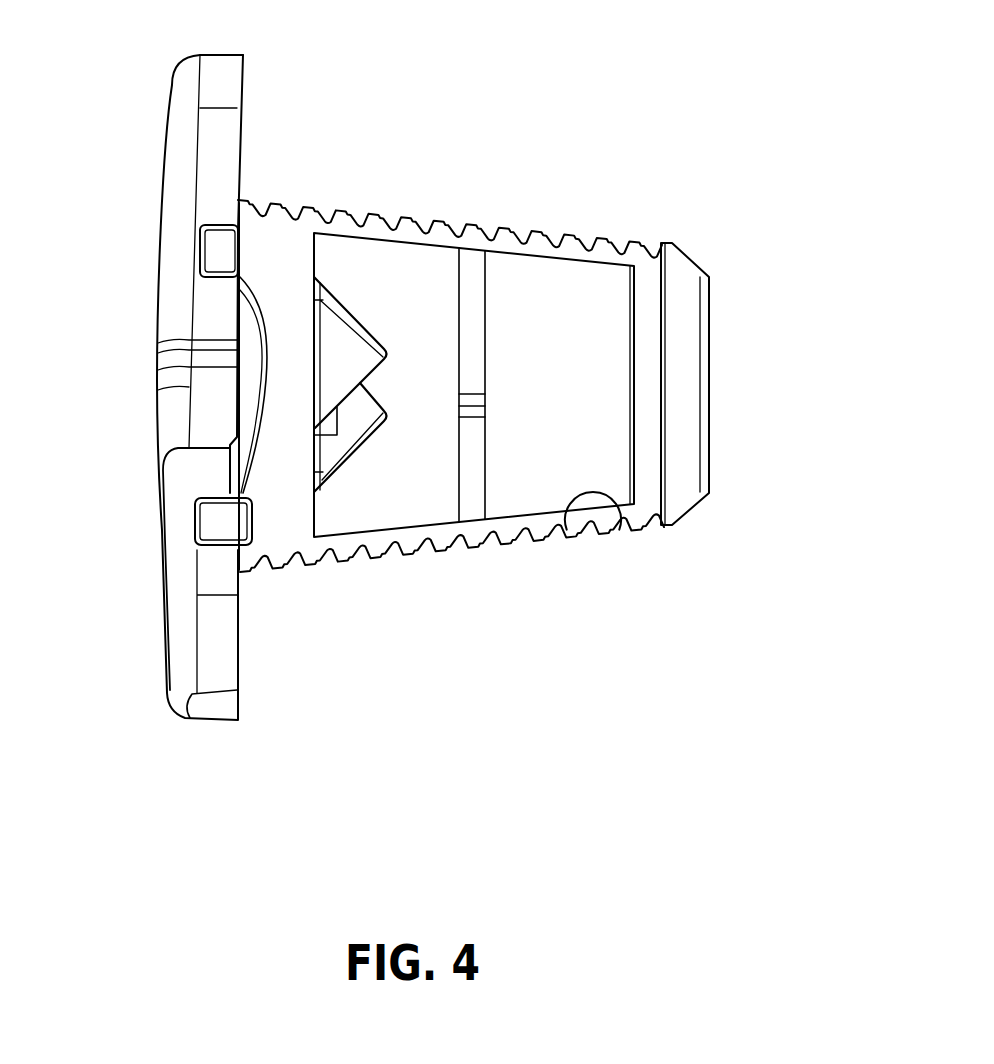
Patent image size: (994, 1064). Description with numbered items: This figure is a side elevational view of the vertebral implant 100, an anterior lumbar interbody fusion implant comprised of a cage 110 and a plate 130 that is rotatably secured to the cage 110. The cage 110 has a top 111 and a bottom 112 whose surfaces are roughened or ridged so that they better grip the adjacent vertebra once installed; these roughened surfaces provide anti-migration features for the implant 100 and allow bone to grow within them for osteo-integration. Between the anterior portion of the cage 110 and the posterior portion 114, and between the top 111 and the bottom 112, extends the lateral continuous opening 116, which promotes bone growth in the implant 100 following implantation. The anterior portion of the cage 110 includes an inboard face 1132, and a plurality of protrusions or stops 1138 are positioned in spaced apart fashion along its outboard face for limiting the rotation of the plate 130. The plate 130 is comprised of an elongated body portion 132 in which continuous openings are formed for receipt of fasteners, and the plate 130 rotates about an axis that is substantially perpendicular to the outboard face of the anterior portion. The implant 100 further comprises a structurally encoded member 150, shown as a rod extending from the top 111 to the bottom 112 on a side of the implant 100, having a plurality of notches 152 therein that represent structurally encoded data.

The vertebral implant 100 is at (452, 71).
The cage 110 is at (403, 206).
The top 111 is at (598, 236).
The bottom 112 is at (307, 565).
The posterior portion 114 is at (702, 404).
The lateral continuous opening 116 is at (567, 537).
The plate 130 is at (207, 738).
The elongated body portion 132 is at (165, 537).
The structurally encoded member 150 is at (500, 487).
The notches 152 is at (488, 403).
The inboard face 1132 is at (318, 527).
The stops 1138 is at (220, 250).